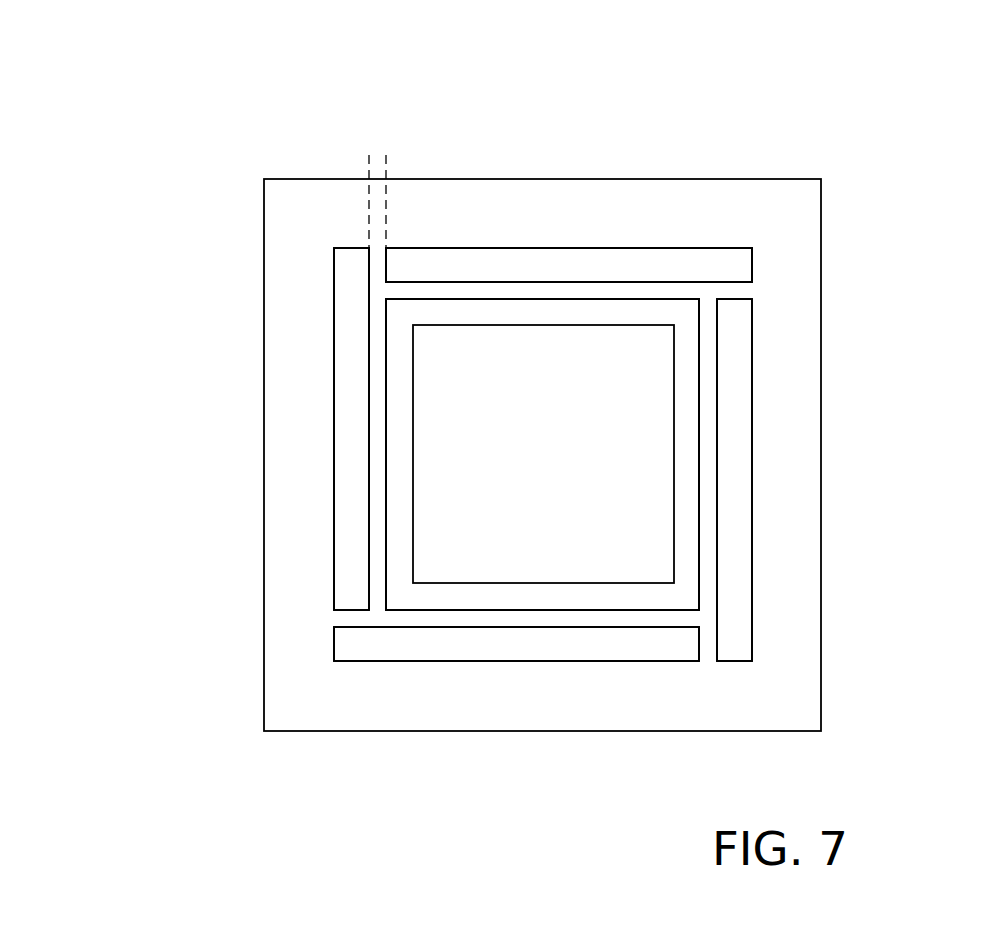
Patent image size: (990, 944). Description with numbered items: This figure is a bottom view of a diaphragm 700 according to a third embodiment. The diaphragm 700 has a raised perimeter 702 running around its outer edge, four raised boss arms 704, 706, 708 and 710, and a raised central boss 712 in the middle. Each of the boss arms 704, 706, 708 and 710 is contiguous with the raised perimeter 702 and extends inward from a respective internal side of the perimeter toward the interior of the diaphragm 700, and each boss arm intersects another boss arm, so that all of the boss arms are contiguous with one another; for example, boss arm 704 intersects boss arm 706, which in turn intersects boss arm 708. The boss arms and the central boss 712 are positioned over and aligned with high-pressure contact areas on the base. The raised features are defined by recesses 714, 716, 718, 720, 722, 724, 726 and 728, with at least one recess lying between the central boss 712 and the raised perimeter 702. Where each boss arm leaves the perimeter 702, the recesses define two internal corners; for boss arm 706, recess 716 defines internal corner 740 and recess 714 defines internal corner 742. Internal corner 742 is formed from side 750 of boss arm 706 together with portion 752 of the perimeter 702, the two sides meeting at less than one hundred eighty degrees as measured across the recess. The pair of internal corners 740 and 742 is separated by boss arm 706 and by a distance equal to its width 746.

The diaphragm 700 is at (886, 133).
The raised perimeter 702 is at (786, 547).
The boss arm 704 is at (608, 288).
The boss arm 706 is at (377, 431).
The boss arm 708 is at (455, 620).
The boss arm 710 is at (712, 594).
The raised central boss 712 is at (562, 466).
The recess 714 is at (521, 268).
The recess 716 is at (352, 307).
The recess 718 is at (378, 640).
The recess 720 is at (742, 463).
The recess 722 is at (690, 395).
The recess 724 is at (503, 312).
The recess 726 is at (400, 552).
The recess 728 is at (567, 598).
The internal corner 740 is at (343, 253).
The internal corner 742 is at (388, 250).
The width 746 is at (369, 164).
The side 750 is at (392, 267).
The portion 752 is at (437, 250).